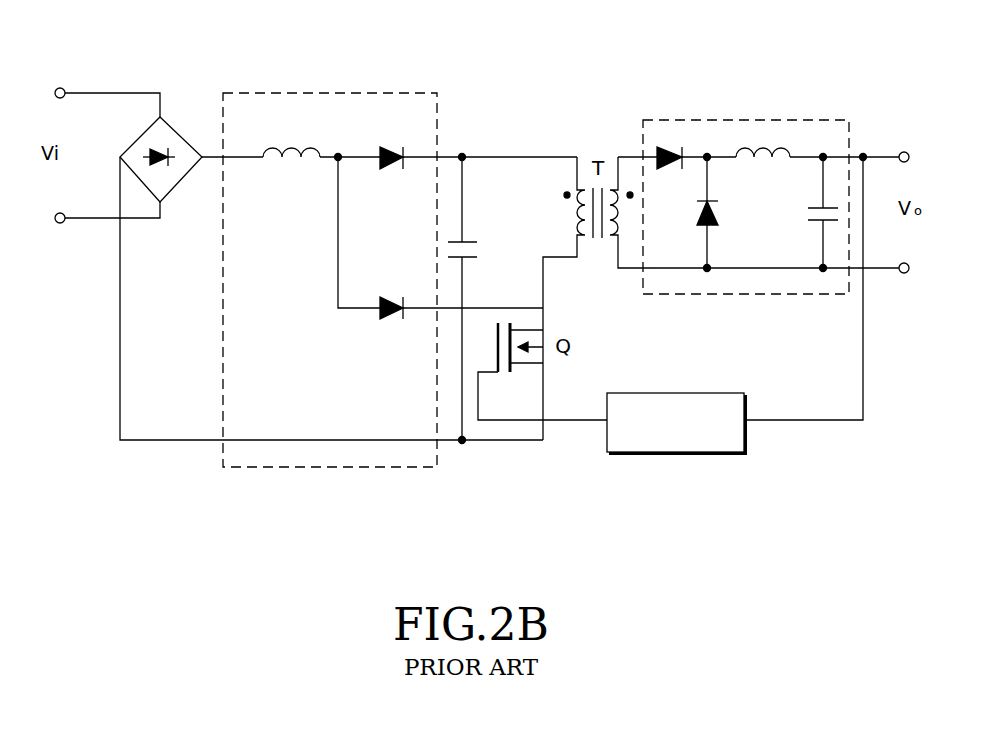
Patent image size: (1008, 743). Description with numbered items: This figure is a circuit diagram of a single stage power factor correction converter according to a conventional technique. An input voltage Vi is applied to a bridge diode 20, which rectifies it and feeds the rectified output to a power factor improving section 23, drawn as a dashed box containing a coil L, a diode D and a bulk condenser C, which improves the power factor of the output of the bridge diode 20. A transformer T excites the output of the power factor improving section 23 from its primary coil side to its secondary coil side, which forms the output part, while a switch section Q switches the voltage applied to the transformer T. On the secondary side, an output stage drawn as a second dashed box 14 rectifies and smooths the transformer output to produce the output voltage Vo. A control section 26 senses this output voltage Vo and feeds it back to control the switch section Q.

The output filter section 14 is at (710, 120).
The bridge diode 20 is at (183, 134).
The power factor improving section 23 is at (367, 468).
The control section 26 is at (670, 453).